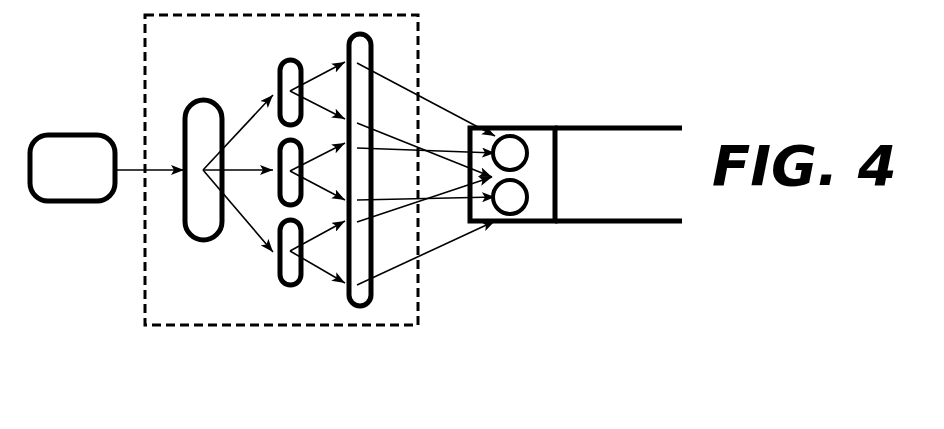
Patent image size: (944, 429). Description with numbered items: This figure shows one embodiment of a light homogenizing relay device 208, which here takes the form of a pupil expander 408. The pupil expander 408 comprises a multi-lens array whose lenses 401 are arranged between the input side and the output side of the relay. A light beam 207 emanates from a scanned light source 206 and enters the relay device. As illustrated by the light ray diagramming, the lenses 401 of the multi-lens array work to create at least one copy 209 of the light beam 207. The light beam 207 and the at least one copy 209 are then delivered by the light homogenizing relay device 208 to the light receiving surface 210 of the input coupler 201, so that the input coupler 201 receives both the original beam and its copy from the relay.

The input coupler 201 is at (643, 182).
The scanned light source 206 is at (78, 178).
The light beam 207 is at (135, 168).
The light homogenizing relay device 208 is at (418, 53).
The copy of light beam 209 is at (520, 214).
The light receiving surface 210 is at (537, 173).
The lenses 401 is at (204, 224).
The pupil expander 408 is at (183, 252).